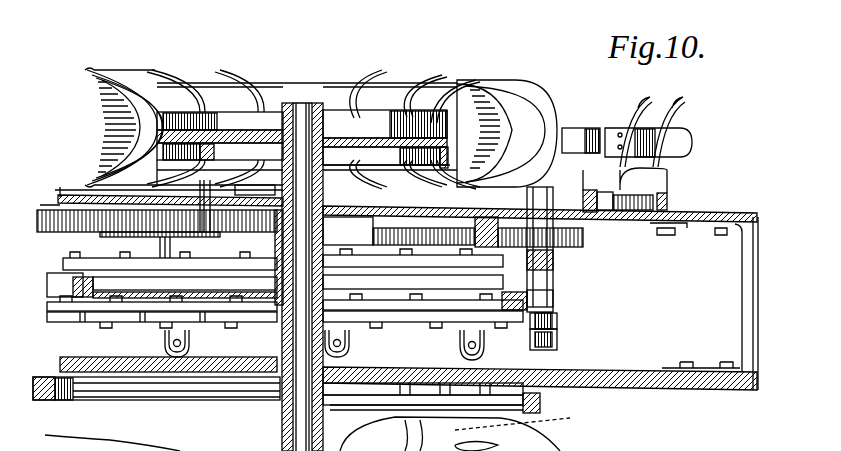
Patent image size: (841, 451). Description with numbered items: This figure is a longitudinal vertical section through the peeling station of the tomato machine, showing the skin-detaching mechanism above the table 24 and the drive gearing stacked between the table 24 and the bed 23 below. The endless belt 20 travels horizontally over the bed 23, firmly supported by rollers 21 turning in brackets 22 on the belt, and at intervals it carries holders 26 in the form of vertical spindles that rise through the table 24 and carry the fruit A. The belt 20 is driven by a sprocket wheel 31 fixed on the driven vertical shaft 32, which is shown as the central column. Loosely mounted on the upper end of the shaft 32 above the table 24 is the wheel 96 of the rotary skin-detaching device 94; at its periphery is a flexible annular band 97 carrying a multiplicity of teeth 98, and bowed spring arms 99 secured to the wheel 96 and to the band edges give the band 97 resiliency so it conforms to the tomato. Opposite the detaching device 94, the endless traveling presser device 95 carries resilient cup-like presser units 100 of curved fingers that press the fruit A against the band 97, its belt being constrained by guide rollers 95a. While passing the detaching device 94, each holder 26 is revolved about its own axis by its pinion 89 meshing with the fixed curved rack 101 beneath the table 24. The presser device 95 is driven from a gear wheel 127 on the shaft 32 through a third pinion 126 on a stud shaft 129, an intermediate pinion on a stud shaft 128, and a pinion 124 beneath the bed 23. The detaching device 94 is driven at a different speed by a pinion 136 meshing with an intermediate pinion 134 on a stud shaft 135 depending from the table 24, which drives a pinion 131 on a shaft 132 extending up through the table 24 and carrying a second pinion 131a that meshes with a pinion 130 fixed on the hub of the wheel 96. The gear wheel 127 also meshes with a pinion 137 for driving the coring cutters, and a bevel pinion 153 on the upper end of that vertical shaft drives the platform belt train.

The endless belt 20 is at (107, 325).
The rollers 21 is at (558, 353).
The brackets 22 is at (560, 340).
The bed 23 is at (630, 364).
The table 24 is at (730, 212).
The holders 26 is at (555, 266).
The sprocket wheel 31 is at (555, 300).
The driven vertical shaft 32 is at (282, 436).
The pinion 89 is at (585, 242).
The rotary skin-detaching device 94 is at (187, 80).
The endless traveling presser device 95 is at (668, 200).
The guide rollers 95a is at (612, 192).
The wheel 96 is at (255, 124).
The flexible annular band 97 is at (100, 112).
The teeth 98 is at (94, 94).
The bowed spring arms 99 is at (148, 58).
The presser units 100 is at (636, 104).
The fixed curved rack 101 is at (485, 250).
The pinion 124 is at (493, 372).
The third pinion 126 is at (350, 419).
The gear wheel 127 is at (378, 327).
The stud shaft 128 is at (440, 385).
The stud shaft 129 is at (415, 388).
The pinion 130 is at (330, 138).
The pinion 131 is at (228, 238).
The second pinion 131a is at (236, 110).
The shaft 132 is at (246, 240).
The intermediate pinion 134 is at (88, 233).
The stud shaft 135 is at (128, 238).
The pinion 136 is at (42, 212).
The pinion 137 is at (42, 398).
The bevel pinion 153 is at (462, 345).
The fruit A is at (548, 100).